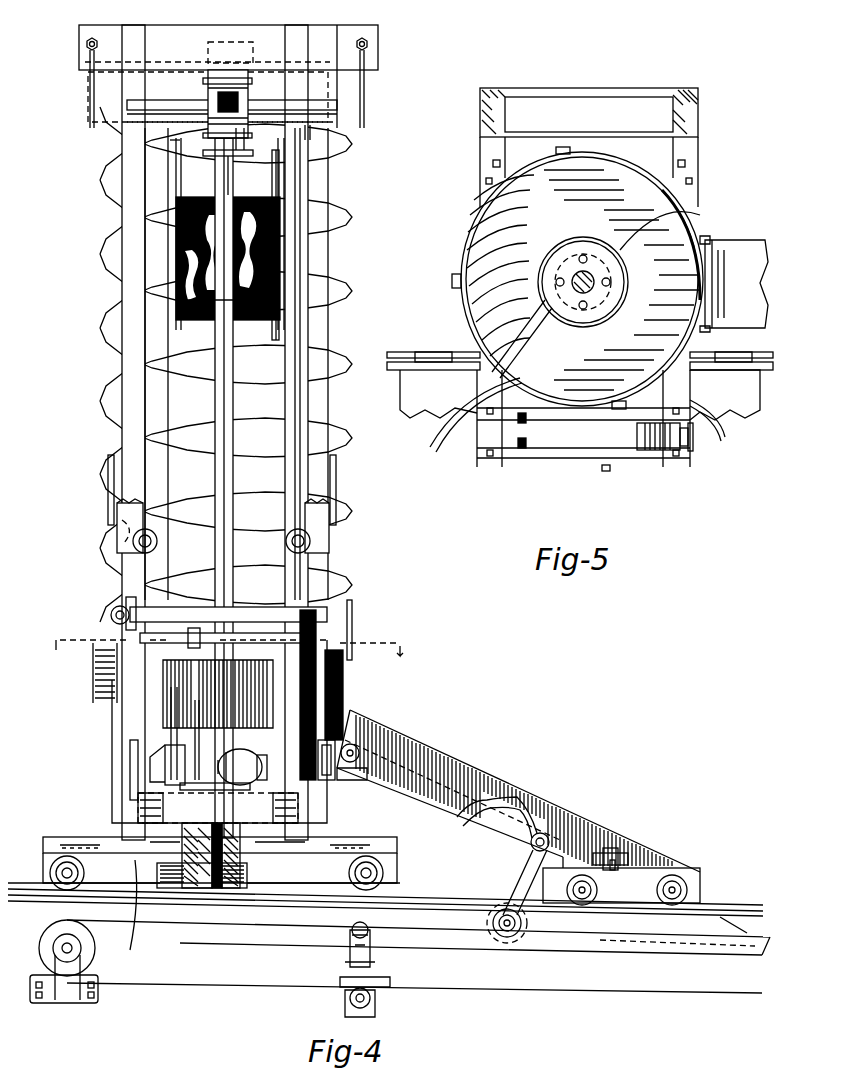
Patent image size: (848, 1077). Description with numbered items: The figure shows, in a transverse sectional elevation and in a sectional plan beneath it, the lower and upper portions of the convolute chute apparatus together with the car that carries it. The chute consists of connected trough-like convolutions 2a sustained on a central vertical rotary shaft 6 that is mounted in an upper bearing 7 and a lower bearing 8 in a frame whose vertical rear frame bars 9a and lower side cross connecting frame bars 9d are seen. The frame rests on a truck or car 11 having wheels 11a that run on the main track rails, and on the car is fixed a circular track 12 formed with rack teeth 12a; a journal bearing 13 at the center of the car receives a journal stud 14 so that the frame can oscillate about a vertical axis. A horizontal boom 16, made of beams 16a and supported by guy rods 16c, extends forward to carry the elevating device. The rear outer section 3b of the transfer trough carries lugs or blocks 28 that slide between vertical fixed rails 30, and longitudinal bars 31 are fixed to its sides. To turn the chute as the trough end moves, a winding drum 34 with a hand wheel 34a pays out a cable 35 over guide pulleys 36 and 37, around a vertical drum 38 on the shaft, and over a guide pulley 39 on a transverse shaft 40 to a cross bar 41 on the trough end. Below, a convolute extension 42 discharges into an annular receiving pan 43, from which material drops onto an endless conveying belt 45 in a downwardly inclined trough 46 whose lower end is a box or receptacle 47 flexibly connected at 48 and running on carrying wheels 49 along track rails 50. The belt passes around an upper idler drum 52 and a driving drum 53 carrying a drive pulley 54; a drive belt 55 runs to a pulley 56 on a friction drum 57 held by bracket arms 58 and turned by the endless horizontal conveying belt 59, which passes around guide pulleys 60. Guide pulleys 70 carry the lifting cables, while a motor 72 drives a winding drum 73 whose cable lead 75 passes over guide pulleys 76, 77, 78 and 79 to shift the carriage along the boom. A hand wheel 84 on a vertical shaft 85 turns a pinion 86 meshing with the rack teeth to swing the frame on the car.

In FIG. 4, the convolutions 2a is at (340, 200).
In FIG. 5, the convolutions 2a is at (492, 175).
In FIG. 4, the rear outer section 3b is at (178, 228).
In FIG. 4, the vertical rotary shaft 6 is at (245, 372).
In FIG. 5, the vertical rotary shaft 6 is at (583, 272).
In FIG. 4, the upper bearing 7 is at (235, 45).
In FIG. 5, the lower bearing 8 is at (555, 300).
In FIG. 5, the vertical rear frame bars 9a is at (698, 120).
In FIG. 5, the lower side horizontal cross connecting frame bars 9d is at (698, 176).
In FIG. 4, the truck or car 11 is at (385, 878).
In FIG. 5, the truck or car 11 is at (740, 420).
In FIG. 4, the wheels 11a is at (400, 896).
In FIG. 5, the wheels 11a is at (735, 365).
In FIG. 4, the circular track 12 is at (380, 845).
In FIG. 5, the circular track 12 is at (445, 452).
In FIG. 4, the rack teeth 12a is at (340, 845).
In FIG. 4, the journal bearing 13 is at (240, 888).
In FIG. 4, the journal stud 14 is at (210, 890).
In FIG. 4, the horizontal boom 16 is at (330, 545).
In FIG. 4, the beams 16a is at (320, 630).
In FIG. 4, the guy rods 16c is at (338, 112).
In FIG. 4, the lugs or blocks 28 is at (285, 272).
In FIG. 4, the vertical fixed rails 30 is at (290, 355).
In FIG. 5, the vertical fixed rails 30 is at (520, 458).
In FIG. 4, the longitudinal bars 31 is at (176, 140).
In FIG. 4, the winding drum 34 is at (360, 748).
In FIG. 5, the winding drum 34 is at (658, 452).
In FIG. 4, the hand wheel 34a is at (330, 780).
In FIG. 4, the cable 35 is at (300, 470).
In FIG. 4, the guide pulley 36 is at (300, 142).
In FIG. 4, the guide pulley 37 is at (265, 140).
In FIG. 4, the vertical drum 38 is at (205, 152).
In FIG. 4, the guide pulley 39 is at (228, 95).
In FIG. 4, the transverse shaft 40 is at (176, 102).
In FIG. 4, the cross bar 41 is at (178, 272).
In FIG. 5, the convolute extension 42 is at (472, 220).
In FIG. 4, the annular receiving pan 43 is at (320, 690).
In FIG. 5, the annular receiving pan 43 is at (465, 335).
In FIG. 4, the endless conveying belt 45 is at (505, 808).
In FIG. 5, the endless conveying belt 45 is at (745, 255).
In FIG. 4, the downwardly inclined trough 46 is at (608, 838).
In FIG. 5, the downwardly inclined trough 46 is at (728, 238).
In FIG. 4, the box or receptacle 47 is at (660, 868).
In FIG. 4, the flexible connection 48 is at (630, 860).
In FIG. 4, the carrying wheels 49 is at (690, 892).
In FIG. 4, the track rails 50 is at (735, 910).
In FIG. 4, the upper idler drum 52 is at (410, 735).
In FIG. 4, the driving drum 53 is at (542, 834).
In FIG. 4, the drive pulley 54 is at (548, 838).
In FIG. 4, the drive belt 55 is at (520, 870).
In FIG. 4, the pulley 56 is at (495, 940).
In FIG. 4, the friction drum 57 is at (507, 940).
In FIG. 4, the bracket arms 58 is at (525, 930).
In FIG. 4, the endless horizontal conveying belt 59 is at (428, 990).
In FIG. 4, the guide pulleys 60 is at (85, 975).
In FIG. 4, the guide pulleys 70 is at (108, 470).
In FIG. 4, the motor 72 is at (262, 762).
In FIG. 4, the winding drum 73 is at (138, 812).
In FIG. 4, the lead of the cable 75 is at (175, 730).
In FIG. 4, the guide pulley 76 is at (200, 640).
In FIG. 4, the guide pulley 77 is at (270, 622).
In FIG. 4, the guide pulley 78 is at (110, 614).
In FIG. 4, the guide pulley 79 is at (117, 548).
In FIG. 4, the hand wheel 84 is at (112, 765).
In FIG. 4, the vertical shaft 85 is at (130, 785).
In FIG. 4, the pinion 86 is at (128, 940).